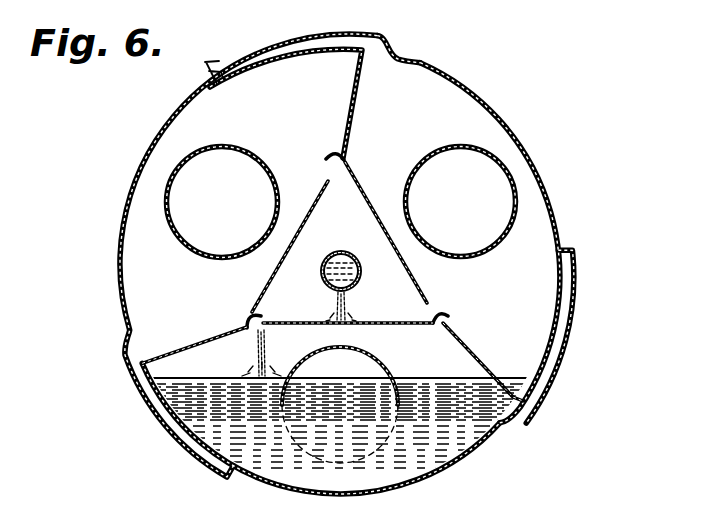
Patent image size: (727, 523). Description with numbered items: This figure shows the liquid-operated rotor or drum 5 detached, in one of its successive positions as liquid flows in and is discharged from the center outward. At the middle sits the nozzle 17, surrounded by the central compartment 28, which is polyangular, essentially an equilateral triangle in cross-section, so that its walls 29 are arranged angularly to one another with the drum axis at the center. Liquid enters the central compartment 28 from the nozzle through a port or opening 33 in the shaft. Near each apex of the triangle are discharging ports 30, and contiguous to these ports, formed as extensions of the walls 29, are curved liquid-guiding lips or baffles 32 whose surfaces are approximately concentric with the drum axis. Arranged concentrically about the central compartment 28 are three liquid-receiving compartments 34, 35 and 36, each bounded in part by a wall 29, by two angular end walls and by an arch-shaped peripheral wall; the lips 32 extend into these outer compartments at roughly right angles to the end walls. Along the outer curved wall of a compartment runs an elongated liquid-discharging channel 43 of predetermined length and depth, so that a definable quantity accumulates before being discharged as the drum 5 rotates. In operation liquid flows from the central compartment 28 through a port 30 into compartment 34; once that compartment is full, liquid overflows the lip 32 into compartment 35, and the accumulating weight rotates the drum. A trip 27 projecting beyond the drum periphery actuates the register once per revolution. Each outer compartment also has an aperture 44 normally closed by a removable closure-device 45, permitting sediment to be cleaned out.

The rotor or drum 5 is at (512, 130).
The nozzle 17 is at (342, 253).
The trip 27 is at (206, 61).
The central compartment 28 is at (302, 246).
The walls 29 is at (417, 328).
The discharging ports 30 is at (255, 330).
The liquid-guiding lips or baffles 32 is at (247, 337).
The port or opening 33 is at (345, 290).
The liquid-receiving compartment 34 is at (457, 368).
The liquid-receiving compartment 35 is at (543, 233).
The liquid-receiving compartment 36 is at (286, 103).
The liquid-discharging channel 43 is at (568, 331).
The aperture 44 is at (313, 36).
The closure-device 45 is at (165, 427).